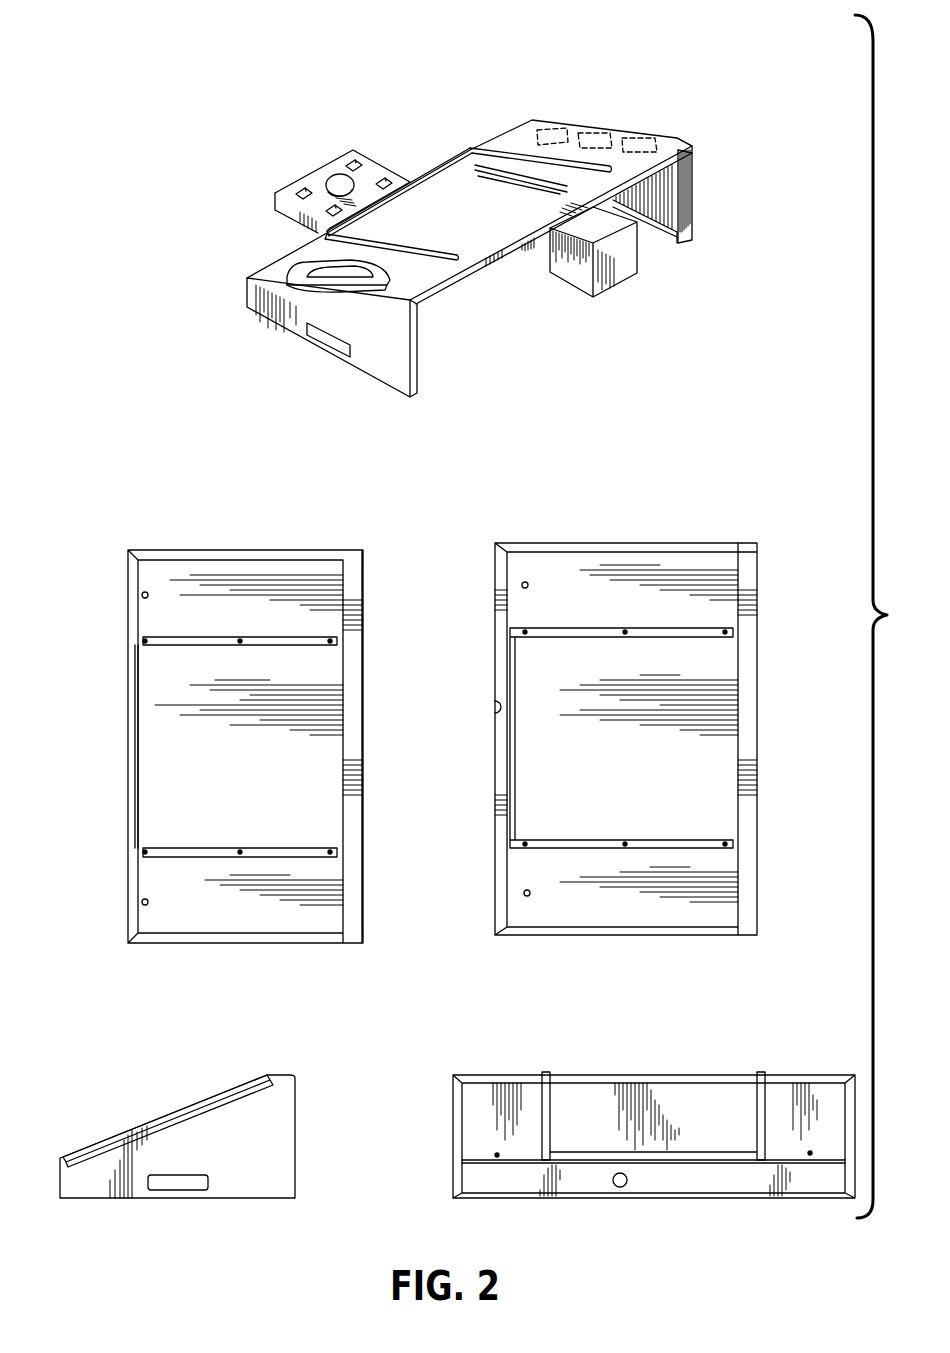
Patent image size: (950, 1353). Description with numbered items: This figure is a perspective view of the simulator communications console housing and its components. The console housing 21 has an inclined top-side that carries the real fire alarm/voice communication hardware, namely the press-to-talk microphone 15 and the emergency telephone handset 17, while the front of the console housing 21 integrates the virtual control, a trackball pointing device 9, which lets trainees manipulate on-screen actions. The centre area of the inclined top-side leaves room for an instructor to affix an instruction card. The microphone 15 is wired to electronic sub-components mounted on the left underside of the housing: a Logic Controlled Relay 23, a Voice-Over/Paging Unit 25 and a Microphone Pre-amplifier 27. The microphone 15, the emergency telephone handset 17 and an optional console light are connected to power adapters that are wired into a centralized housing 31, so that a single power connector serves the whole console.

The trackball pointing device 9 is at (323, 168).
The press-to-talk microphone 15 is at (503, 145).
The emergency telephone handset 17 is at (312, 255).
The console housing 21 is at (392, 403).
The Logic Controlled Relay 23 is at (640, 138).
The Voice-Over/Paging Unit 25 is at (592, 131).
The Microphone Pre-amplifier 27 is at (550, 128).
The centralized housing 31 is at (567, 267).